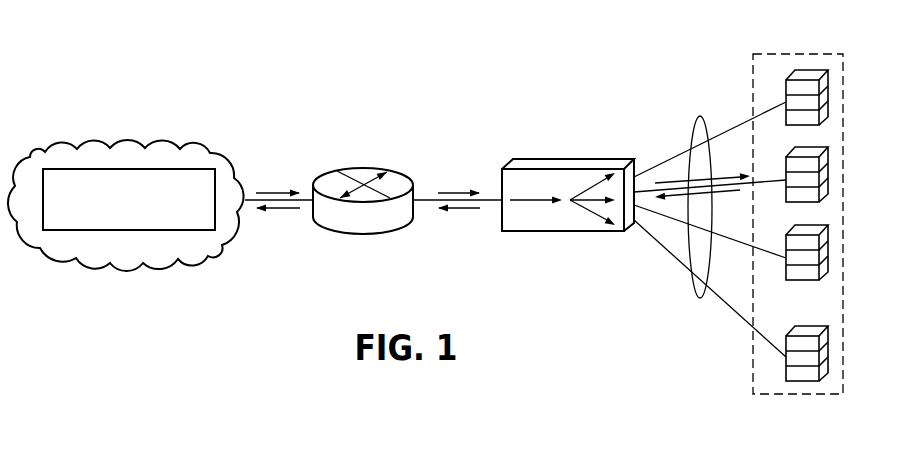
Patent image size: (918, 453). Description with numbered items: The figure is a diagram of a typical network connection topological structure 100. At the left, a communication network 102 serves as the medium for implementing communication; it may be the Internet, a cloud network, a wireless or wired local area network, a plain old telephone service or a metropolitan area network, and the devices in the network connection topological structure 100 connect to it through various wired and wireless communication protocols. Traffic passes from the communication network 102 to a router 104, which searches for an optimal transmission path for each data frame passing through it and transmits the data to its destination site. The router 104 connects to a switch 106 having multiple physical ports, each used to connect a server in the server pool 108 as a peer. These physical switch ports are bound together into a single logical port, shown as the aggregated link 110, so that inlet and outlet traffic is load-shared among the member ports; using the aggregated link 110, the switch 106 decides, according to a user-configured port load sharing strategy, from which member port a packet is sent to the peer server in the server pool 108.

The network connection topological structure 100 is at (104, 87).
The communication network 102 is at (198, 143).
The router 104 is at (362, 167).
The switch 106 is at (547, 160).
The server pool 108 is at (750, 352).
The aggregated link 110 is at (698, 117).